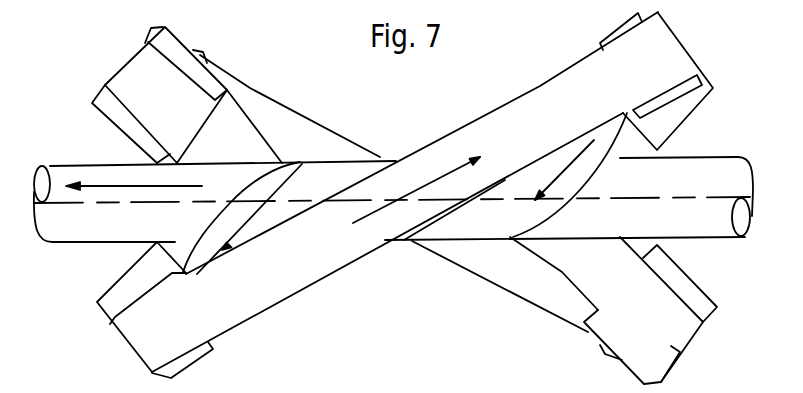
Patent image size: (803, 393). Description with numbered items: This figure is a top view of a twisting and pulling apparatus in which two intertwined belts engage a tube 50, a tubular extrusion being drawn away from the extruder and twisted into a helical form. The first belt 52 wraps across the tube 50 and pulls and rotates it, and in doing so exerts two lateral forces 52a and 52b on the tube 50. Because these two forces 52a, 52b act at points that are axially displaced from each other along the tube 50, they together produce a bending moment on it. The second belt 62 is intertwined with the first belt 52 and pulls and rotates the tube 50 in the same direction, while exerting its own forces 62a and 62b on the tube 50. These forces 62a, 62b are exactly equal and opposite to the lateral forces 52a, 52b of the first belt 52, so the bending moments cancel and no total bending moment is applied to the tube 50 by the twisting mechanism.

The tube 50 is at (670, 187).
The first belt 52 is at (340, 172).
The lateral force 52a is at (557, 100).
The lateral force 52b is at (282, 225).
The belt 62 is at (176, 112).
The force 62a is at (525, 263).
The force 62b is at (320, 168).